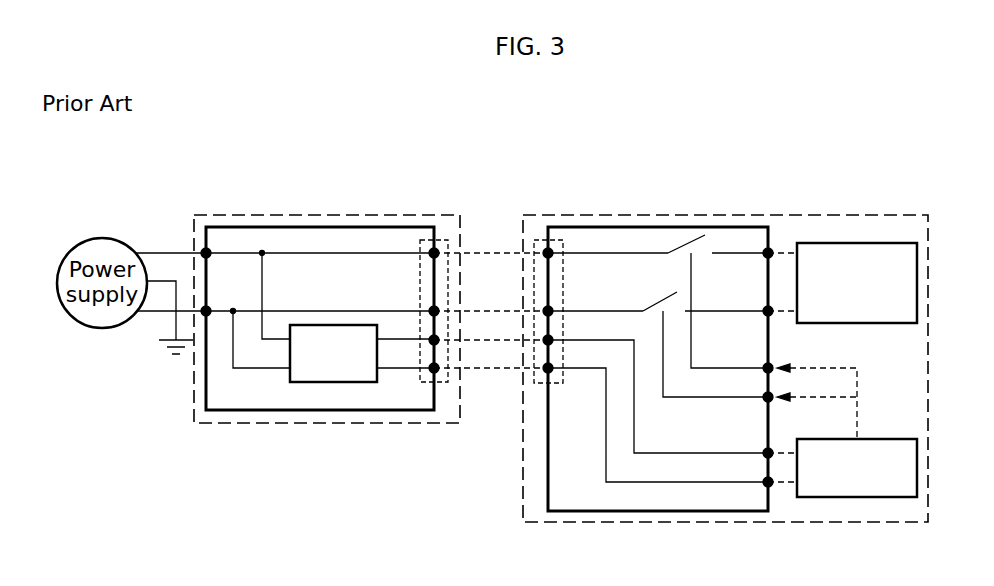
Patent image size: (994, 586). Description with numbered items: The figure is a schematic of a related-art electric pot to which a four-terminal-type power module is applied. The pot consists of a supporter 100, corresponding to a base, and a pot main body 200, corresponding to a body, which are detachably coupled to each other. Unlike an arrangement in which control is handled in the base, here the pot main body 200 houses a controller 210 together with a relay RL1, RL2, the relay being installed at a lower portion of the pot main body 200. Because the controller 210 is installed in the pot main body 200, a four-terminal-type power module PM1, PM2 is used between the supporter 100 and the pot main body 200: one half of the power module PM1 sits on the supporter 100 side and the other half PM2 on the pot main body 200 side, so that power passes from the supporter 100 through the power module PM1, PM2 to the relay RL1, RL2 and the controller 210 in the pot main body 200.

The supporter 100 is at (327, 308).
The pot main body 200 is at (708, 356).
The power module PM1 is at (448, 383).
The power module PM2 is at (537, 240).
The relay RL1 is at (658, 297).
The relay RL2 is at (690, 238).
The controller 210 is at (857, 497).